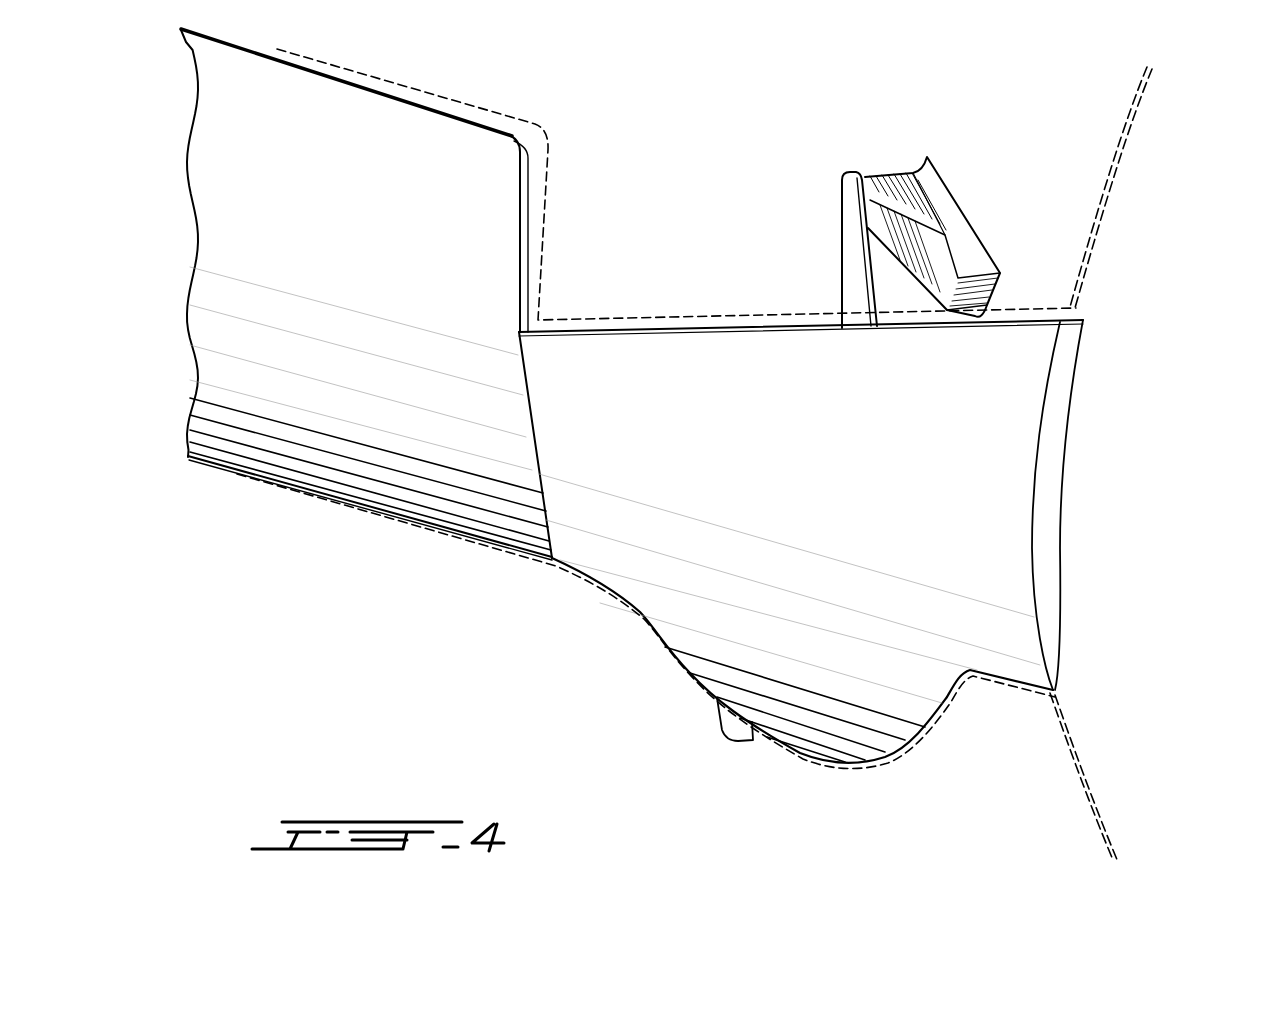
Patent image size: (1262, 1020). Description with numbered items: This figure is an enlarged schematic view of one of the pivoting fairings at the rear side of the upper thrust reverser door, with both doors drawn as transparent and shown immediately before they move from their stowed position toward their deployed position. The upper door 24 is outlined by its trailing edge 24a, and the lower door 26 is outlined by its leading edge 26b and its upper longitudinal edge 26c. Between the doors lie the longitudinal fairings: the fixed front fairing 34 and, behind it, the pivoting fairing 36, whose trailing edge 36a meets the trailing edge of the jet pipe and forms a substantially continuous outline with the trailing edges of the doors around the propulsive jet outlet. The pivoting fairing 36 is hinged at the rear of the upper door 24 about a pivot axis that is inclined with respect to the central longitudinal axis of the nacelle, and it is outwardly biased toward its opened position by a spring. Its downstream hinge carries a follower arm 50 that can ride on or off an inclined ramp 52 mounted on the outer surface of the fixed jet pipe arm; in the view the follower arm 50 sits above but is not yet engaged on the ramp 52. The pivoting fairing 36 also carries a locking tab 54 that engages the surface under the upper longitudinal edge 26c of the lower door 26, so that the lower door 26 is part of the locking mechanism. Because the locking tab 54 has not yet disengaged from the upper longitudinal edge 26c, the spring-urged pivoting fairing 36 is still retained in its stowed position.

The pivoting door 24 is at (1063, 117).
The trailing edge 24a is at (1113, 153).
The pivoting door 26 is at (1003, 802).
The leading edge 26b is at (1100, 833).
The upper longitudinal edge 26c is at (660, 650).
The front fairing 34 is at (217, 204).
The pivoting fairing 36 is at (997, 401).
The trailing edge 36a is at (1047, 492).
The follower arm 50 is at (868, 228).
The inclined ramp 52 is at (943, 222).
The locking tab 54 is at (733, 727).